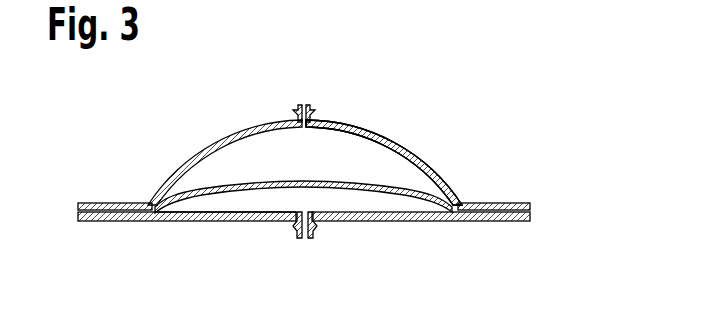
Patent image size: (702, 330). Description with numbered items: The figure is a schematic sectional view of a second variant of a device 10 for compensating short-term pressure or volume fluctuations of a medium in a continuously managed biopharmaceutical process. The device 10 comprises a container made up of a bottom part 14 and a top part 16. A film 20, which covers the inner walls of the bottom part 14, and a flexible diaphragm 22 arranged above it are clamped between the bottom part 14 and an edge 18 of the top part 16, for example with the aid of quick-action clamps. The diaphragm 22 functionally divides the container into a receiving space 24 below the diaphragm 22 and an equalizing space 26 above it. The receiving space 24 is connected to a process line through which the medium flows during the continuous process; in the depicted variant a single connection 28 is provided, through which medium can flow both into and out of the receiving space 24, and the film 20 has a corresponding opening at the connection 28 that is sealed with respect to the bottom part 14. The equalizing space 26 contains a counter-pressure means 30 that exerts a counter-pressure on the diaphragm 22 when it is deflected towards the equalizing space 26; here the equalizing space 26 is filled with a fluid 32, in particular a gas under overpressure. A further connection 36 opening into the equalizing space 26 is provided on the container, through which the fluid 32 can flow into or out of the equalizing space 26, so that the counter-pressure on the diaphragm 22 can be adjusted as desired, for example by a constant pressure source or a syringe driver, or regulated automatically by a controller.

The device 10 is at (504, 88).
The bottom part 14 is at (130, 222).
The top part 16 is at (340, 123).
The edge 18 is at (118, 203).
The film 20 is at (205, 210).
The flexible diaphragm 22 is at (432, 200).
The receiving space 24 is at (373, 203).
The equalizing space 26 is at (319, 164).
The connection 28 is at (291, 227).
The counter-pressure means 30 is at (392, 165).
The fluid 32 is at (384, 135).
The connection 36 is at (294, 114).